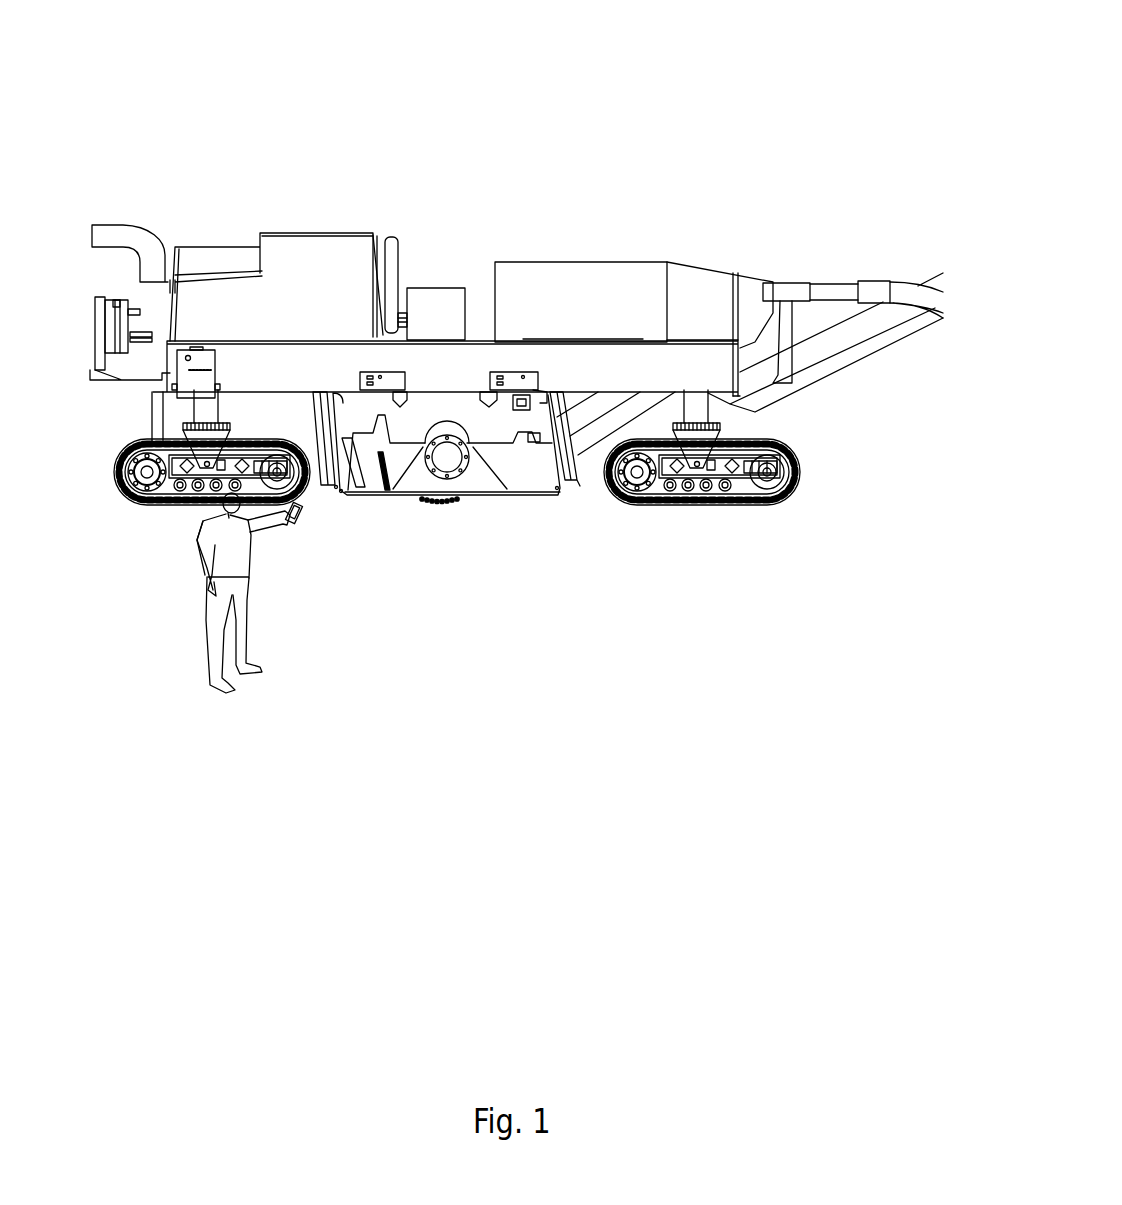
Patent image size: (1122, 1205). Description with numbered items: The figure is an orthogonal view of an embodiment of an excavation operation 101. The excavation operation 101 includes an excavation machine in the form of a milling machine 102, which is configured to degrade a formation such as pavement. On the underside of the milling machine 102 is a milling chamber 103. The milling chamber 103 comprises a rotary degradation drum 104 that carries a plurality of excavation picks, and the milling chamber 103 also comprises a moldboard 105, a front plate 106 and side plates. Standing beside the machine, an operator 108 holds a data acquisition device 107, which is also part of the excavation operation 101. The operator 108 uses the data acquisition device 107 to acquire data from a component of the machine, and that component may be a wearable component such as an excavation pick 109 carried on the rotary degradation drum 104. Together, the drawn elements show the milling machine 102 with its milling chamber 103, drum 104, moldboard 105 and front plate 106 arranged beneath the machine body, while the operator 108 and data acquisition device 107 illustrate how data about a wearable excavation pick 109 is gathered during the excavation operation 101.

The excavation operation 101 is at (503, 369).
The milling machine 102 is at (516, 340).
The milling chamber 103 is at (387, 548).
The rotary degradation drum 104 is at (513, 550).
The moldboard 105 is at (326, 419).
The front plate 106 is at (576, 478).
The data acquisition device 107 is at (296, 528).
The operator 108 is at (225, 566).
The excavation pick 109 is at (460, 500).